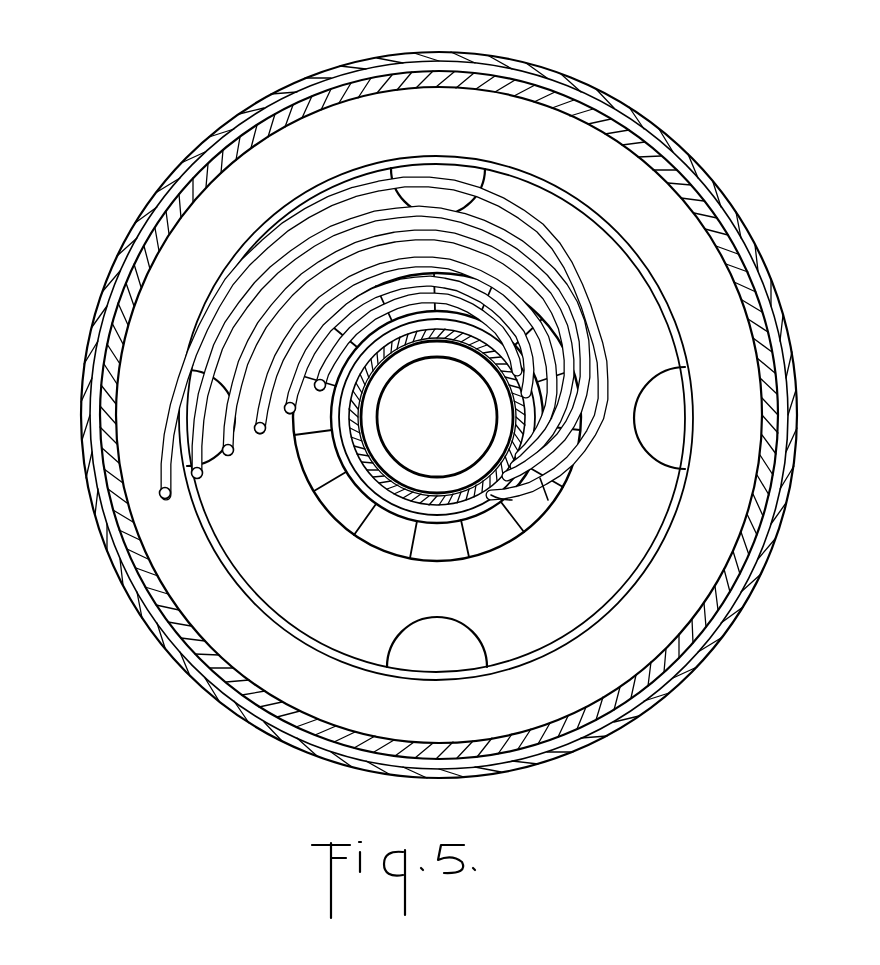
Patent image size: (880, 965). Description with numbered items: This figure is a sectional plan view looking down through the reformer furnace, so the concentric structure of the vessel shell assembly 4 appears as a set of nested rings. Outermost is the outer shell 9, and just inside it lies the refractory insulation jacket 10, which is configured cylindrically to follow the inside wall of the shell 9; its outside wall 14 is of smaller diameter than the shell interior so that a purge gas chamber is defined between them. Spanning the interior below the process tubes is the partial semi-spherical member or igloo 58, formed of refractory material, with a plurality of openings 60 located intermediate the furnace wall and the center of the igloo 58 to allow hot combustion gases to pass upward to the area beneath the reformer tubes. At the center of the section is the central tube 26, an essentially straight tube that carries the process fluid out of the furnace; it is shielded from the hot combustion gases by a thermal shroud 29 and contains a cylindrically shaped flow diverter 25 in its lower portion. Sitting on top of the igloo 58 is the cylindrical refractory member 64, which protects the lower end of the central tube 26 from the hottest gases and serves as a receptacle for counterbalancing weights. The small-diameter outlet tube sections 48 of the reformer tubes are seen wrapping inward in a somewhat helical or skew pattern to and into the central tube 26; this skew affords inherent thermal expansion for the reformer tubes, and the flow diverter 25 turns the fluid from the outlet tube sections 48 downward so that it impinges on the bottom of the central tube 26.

The vessel shell assembly 4 is at (110, 674).
The outer shell 9 is at (126, 602).
The insulation jacket 10 is at (545, 82).
The outside wall 14 is at (118, 527).
The flow diverter 25 is at (383, 446).
The central tube 26 is at (348, 513).
The thermal shroud 29 is at (518, 526).
The outlet tube section 48 is at (576, 354).
The partial semi-spherical member (igloo) 58 is at (637, 537).
The openings 60 is at (415, 188).
The cylindrical refractory member 64 is at (552, 500).